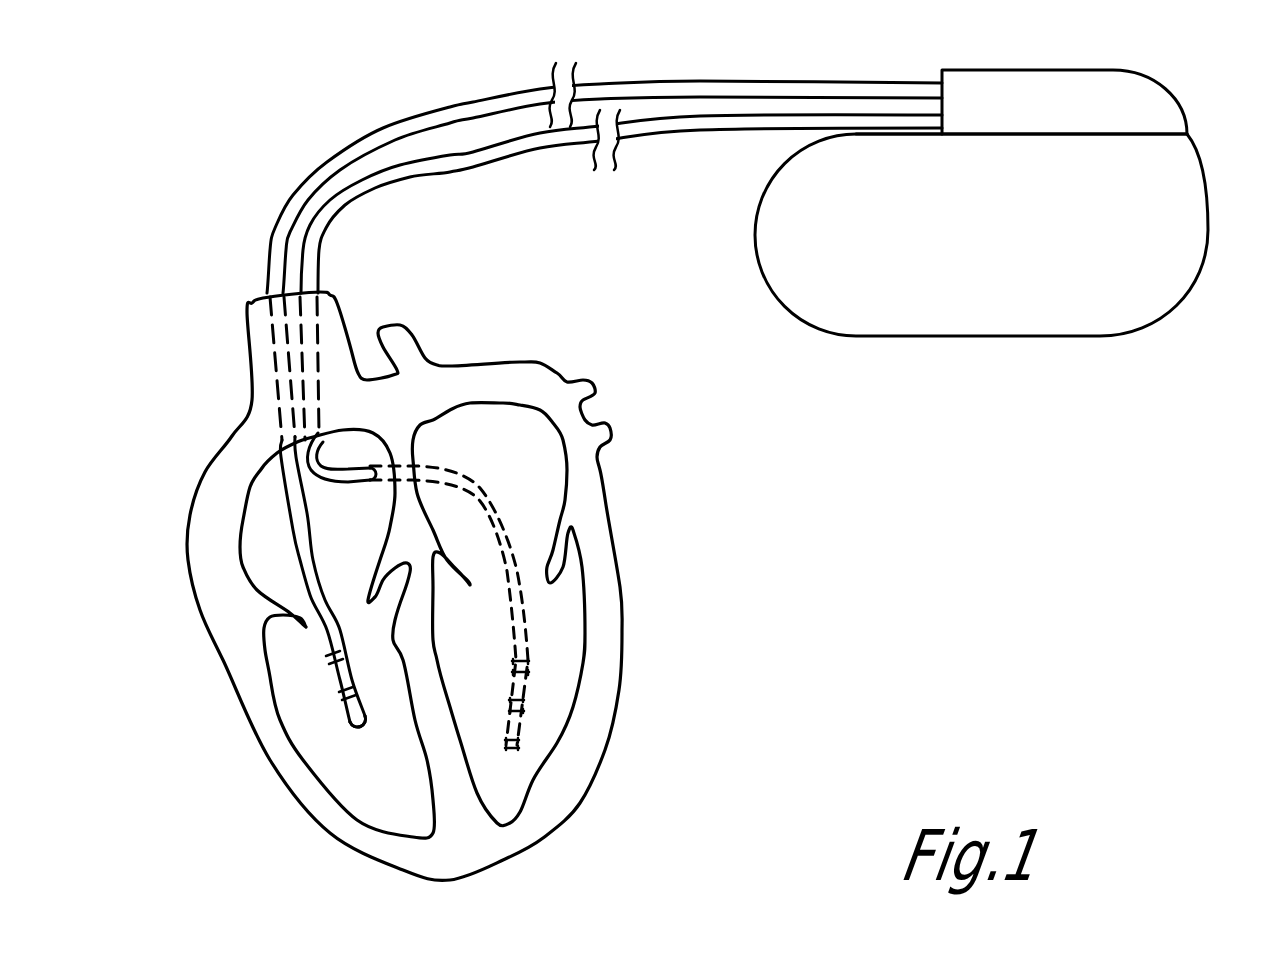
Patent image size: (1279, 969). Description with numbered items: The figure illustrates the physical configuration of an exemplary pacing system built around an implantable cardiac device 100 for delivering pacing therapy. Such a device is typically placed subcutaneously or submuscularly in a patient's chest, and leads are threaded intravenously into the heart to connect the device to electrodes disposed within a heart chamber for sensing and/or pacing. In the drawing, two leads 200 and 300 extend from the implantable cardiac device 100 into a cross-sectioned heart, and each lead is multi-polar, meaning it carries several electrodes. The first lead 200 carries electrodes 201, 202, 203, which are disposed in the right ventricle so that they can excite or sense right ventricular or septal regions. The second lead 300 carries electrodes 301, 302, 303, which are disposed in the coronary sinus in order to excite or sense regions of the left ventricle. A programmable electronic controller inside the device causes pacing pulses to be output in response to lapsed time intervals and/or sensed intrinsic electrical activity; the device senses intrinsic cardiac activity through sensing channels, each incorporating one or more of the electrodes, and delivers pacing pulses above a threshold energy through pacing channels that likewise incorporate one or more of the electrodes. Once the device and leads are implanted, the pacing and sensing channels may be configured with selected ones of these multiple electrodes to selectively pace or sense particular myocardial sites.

The implantable cardiac device 100 is at (1170, 99).
The lead 200 is at (465, 100).
The electrode 201 is at (330, 660).
The electrode 202 is at (345, 687).
The electrode 203 is at (358, 730).
The lead 300 is at (483, 160).
The electrode 301 is at (515, 747).
The electrode 302 is at (520, 710).
The electrode 303 is at (525, 670).